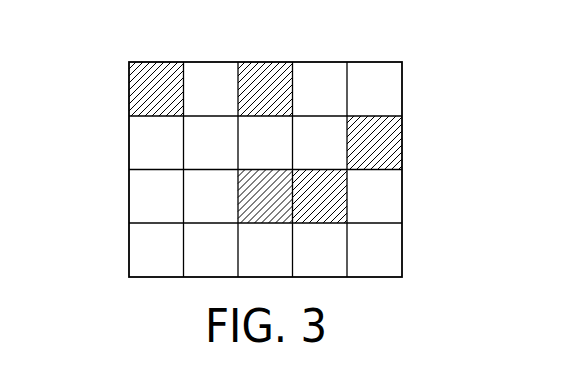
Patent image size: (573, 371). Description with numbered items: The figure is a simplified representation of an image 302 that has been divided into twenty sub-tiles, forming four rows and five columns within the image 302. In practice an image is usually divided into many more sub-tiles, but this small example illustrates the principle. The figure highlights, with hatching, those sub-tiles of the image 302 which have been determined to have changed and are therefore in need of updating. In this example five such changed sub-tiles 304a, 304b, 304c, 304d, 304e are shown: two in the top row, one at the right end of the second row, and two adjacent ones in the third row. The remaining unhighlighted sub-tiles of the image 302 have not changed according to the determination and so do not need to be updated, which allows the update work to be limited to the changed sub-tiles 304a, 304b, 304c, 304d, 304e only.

The image 302 is at (402, 249).
The changed sub-tile 304a is at (129, 92).
The changed sub-tile 304b is at (270, 62).
The changed sub-tile 304c is at (238, 200).
The changed sub-tile 304d is at (347, 202).
The changed sub-tile 304e is at (402, 143).